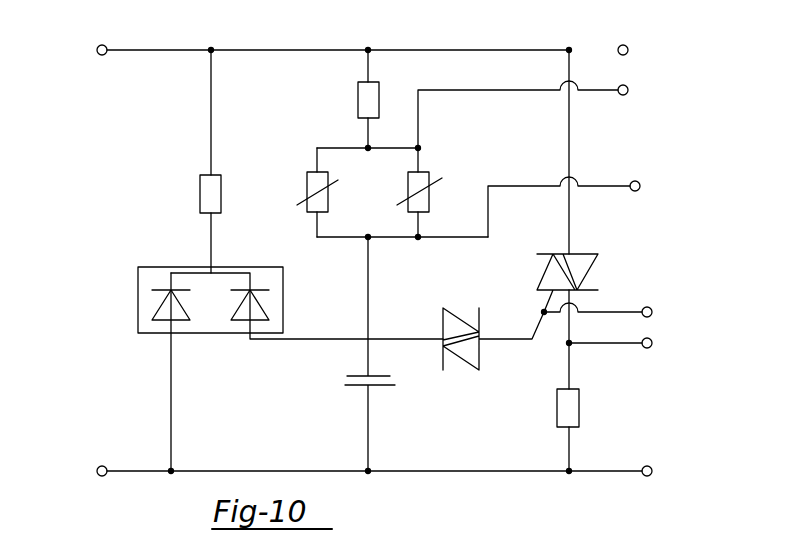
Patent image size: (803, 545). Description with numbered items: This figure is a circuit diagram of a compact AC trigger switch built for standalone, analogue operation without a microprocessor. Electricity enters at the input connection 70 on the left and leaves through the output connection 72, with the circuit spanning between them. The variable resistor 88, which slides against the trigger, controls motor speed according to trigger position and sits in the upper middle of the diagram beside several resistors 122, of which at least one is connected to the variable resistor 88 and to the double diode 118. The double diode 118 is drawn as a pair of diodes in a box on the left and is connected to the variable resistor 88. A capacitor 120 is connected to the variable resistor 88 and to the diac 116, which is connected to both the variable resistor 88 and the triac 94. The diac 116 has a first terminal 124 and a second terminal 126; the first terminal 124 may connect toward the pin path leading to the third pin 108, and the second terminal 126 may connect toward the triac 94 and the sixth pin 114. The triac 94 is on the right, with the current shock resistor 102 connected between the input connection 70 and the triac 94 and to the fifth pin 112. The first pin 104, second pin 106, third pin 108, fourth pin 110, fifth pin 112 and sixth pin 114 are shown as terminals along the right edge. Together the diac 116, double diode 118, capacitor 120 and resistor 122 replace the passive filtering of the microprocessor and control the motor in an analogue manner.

The input connection 70 is at (97, 469).
The output connection 72 is at (97, 48).
The variable resistor 88 is at (297, 195).
The triac 94 is at (592, 272).
The current shock resistor 102 is at (580, 410).
The first pin 104 is at (628, 90).
The second pin 106 is at (628, 50).
The third pin 108 is at (640, 186).
The fourth pin 110 is at (652, 470).
The fifth pin 112 is at (652, 343).
The sixth pin 114 is at (652, 312).
The diac 116 is at (466, 360).
The double diode 118 is at (214, 327).
The capacitor 120 is at (360, 384).
The resistor 122 is at (200, 192).
The first terminal 124 is at (436, 334).
The second terminal 126 is at (484, 334).